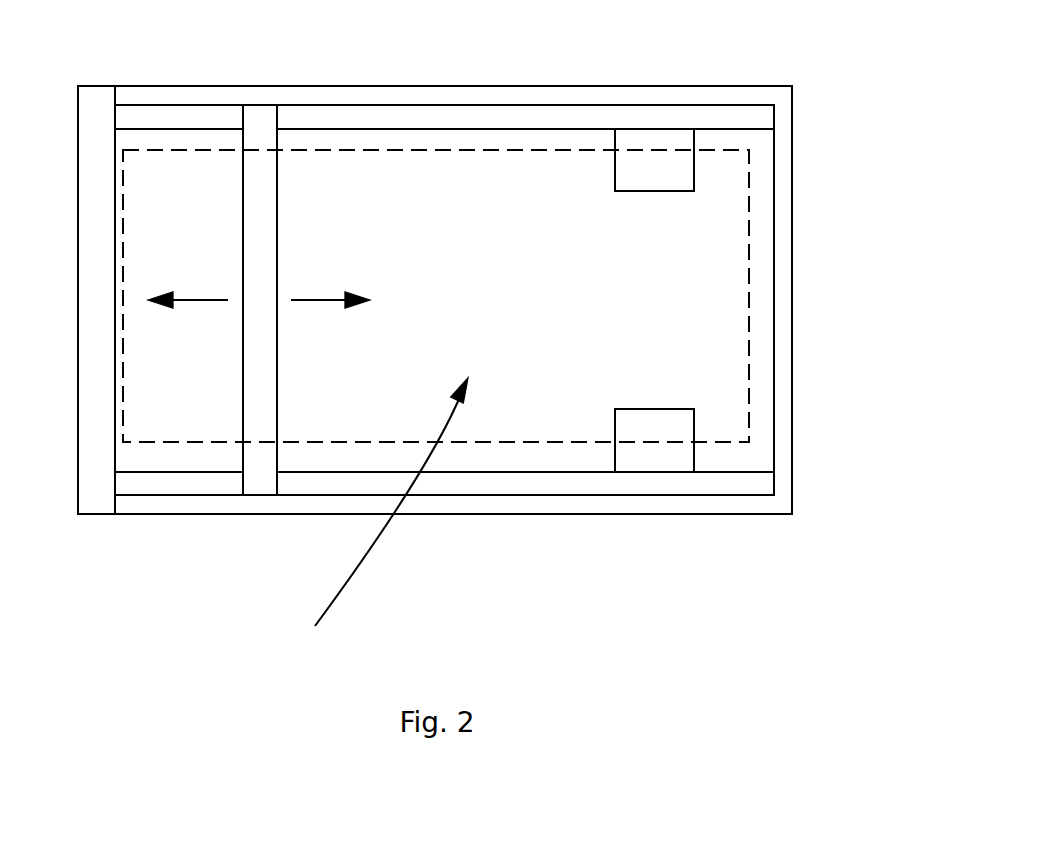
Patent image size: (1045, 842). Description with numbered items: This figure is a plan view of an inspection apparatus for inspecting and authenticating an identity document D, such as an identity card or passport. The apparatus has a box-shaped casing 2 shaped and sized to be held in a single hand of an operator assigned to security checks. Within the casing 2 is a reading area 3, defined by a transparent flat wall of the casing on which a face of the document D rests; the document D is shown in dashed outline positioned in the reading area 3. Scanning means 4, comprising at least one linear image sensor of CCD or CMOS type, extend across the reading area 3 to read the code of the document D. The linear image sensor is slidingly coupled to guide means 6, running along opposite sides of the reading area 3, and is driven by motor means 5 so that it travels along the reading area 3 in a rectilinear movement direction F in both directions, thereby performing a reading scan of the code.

The casing 2 is at (784, 336).
The reading area 3 is at (381, 515).
The scanning means 4 is at (264, 208).
The motor means 5 is at (679, 167).
The guide means 6 is at (180, 117).
The document D is at (478, 205).
The movement direction F is at (203, 300).